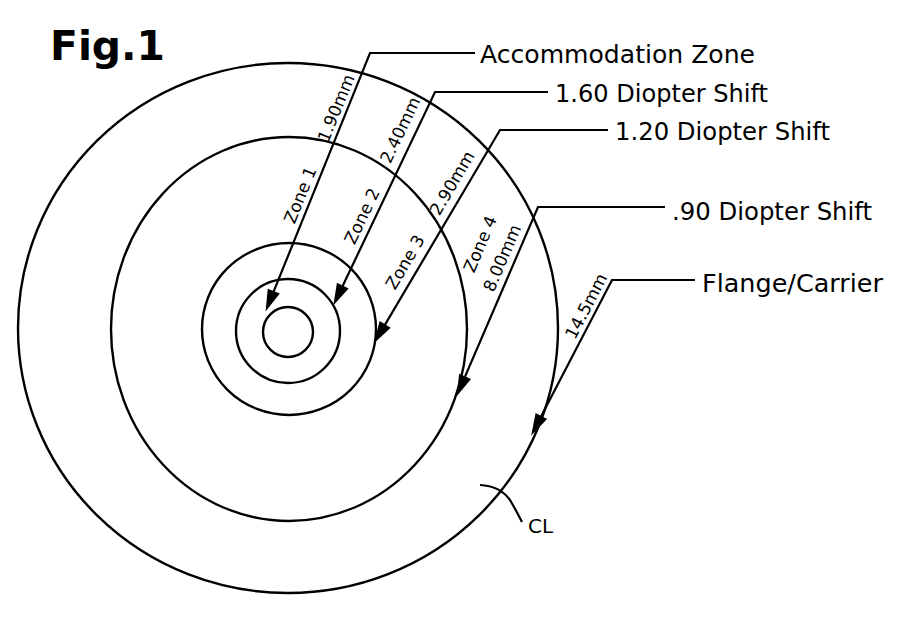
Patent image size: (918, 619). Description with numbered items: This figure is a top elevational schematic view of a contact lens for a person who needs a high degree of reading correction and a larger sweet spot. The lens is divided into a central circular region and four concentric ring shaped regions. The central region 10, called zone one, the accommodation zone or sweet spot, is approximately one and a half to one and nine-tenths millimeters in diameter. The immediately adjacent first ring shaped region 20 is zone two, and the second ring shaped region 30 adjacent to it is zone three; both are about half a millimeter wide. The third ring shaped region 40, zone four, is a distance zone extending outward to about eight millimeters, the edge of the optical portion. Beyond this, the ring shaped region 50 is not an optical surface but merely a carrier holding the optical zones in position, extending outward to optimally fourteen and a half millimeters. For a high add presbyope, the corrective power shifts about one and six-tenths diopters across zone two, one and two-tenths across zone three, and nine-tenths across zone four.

The central region 10 is at (288, 332).
The first ring shaped region 20 is at (288, 331).
The second ring shaped region 30 is at (289, 330).
The third ring shaped region 40 is at (289, 329).
The ring shaped region (carrier) 50 is at (288, 328).